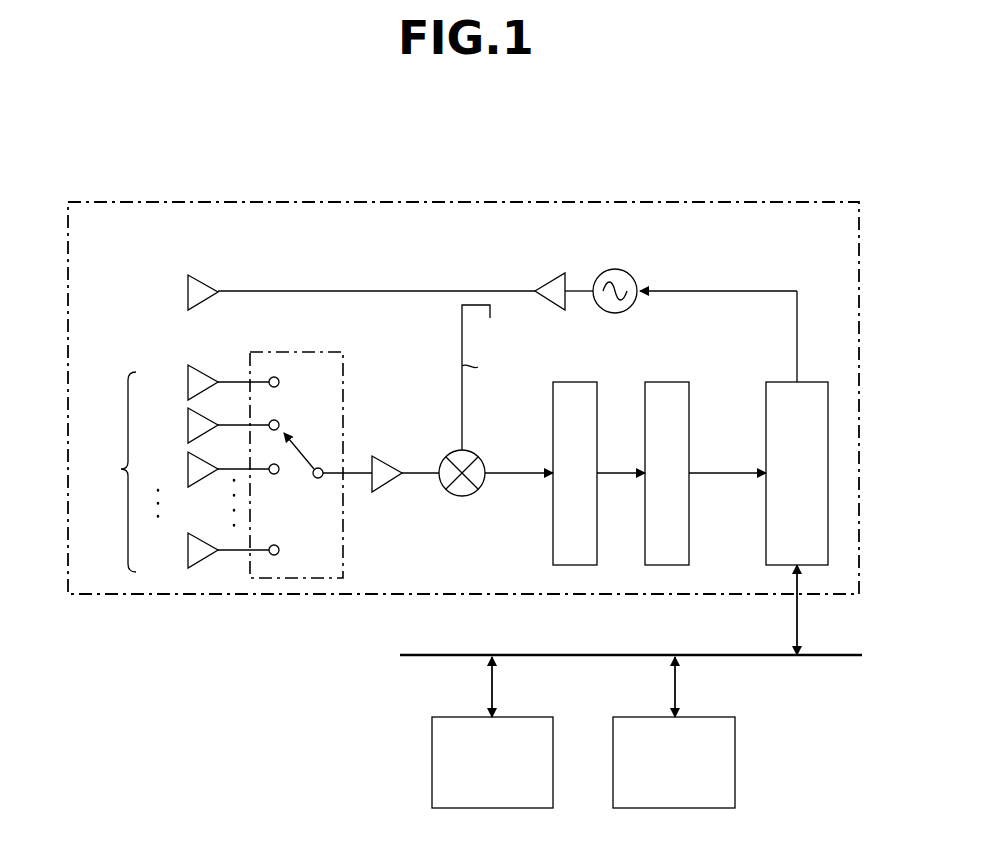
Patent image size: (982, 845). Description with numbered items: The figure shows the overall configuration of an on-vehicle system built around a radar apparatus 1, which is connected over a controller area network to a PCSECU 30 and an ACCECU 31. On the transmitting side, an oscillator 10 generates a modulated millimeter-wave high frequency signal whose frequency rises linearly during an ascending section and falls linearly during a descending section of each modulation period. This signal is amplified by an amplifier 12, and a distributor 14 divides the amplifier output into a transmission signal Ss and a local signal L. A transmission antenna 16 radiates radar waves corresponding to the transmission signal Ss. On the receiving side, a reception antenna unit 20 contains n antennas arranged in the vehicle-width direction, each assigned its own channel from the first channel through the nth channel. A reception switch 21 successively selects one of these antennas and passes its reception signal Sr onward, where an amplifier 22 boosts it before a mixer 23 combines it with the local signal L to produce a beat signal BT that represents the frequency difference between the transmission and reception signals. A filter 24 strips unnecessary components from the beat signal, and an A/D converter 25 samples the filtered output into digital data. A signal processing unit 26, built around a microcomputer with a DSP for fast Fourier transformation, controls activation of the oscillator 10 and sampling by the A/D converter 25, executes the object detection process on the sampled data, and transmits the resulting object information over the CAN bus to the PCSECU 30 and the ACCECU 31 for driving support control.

The radar apparatus 1 is at (270, 152).
The oscillator 10 is at (614, 269).
The amplifier 12 is at (553, 272).
The distributor 14 is at (456, 301).
The transmission antenna 16 is at (200, 276).
The reception antenna unit 20 is at (177, 468).
The reception switch 21 is at (283, 350).
The amplifier 22 is at (386, 490).
The mixer 23 is at (463, 496).
The filter 24 is at (572, 382).
The A/D converter 25 is at (664, 382).
The signal processing unit 26 is at (824, 382).
The PCSECU 30 is at (530, 716).
The ACCECU 31 is at (713, 716).